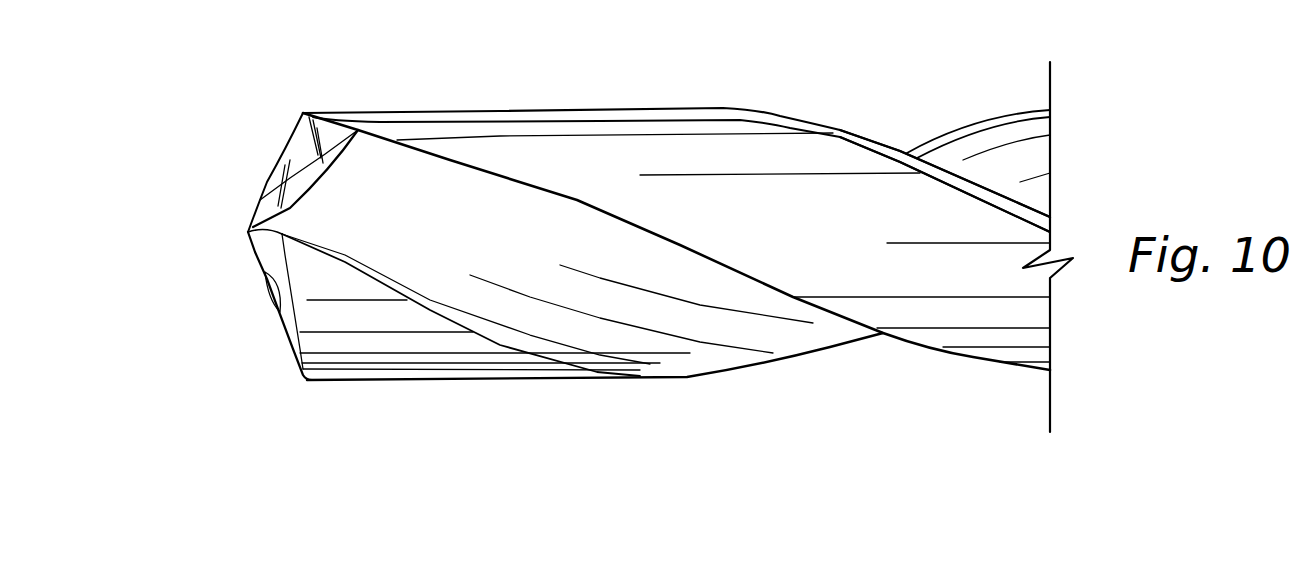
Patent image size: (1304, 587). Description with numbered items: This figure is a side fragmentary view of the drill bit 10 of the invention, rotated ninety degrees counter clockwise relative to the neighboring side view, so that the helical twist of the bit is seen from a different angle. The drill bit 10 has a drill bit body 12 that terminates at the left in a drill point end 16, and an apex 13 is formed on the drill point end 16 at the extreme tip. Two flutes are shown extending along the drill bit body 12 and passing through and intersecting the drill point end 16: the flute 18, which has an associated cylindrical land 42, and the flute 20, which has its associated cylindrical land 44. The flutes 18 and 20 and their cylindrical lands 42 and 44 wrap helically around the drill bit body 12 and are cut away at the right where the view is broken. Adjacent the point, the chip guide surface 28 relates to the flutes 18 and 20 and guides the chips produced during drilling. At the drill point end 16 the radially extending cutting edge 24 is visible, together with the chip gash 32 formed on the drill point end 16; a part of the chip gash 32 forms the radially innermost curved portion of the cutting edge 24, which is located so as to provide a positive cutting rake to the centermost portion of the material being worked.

The drill bit 10 is at (371, 104).
The drill bit body 12 is at (445, 111).
The flute 20 is at (500, 192).
The cylindrical land 42 is at (850, 128).
The flute 18 is at (983, 147).
The chip guide surface 28 is at (283, 148).
The chip gash 32 is at (267, 205).
The apex 13 is at (247, 233).
The cutting edge 24 is at (258, 245).
The drill point end 16 is at (277, 322).
The cylindrical land 44 is at (420, 303).